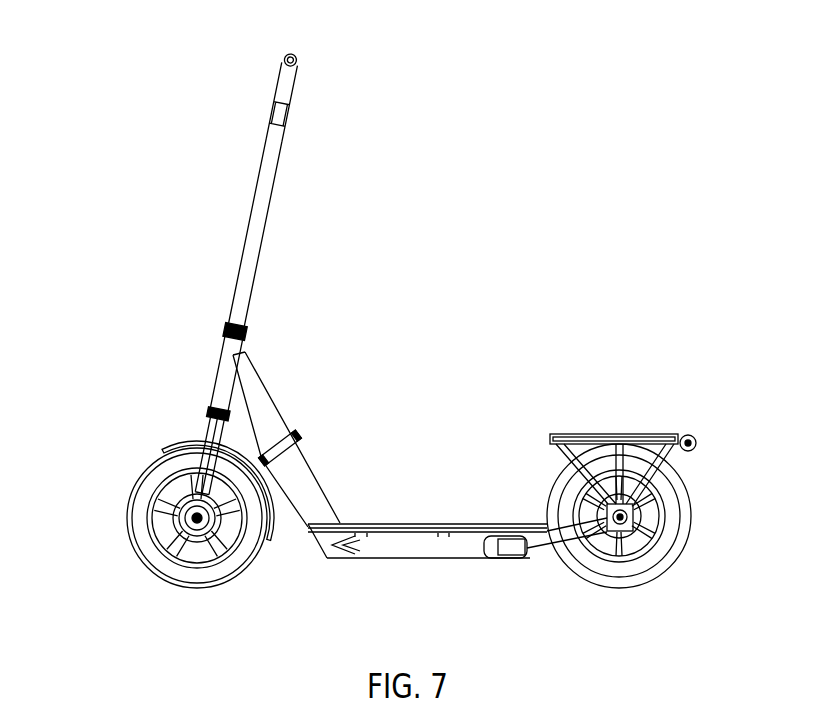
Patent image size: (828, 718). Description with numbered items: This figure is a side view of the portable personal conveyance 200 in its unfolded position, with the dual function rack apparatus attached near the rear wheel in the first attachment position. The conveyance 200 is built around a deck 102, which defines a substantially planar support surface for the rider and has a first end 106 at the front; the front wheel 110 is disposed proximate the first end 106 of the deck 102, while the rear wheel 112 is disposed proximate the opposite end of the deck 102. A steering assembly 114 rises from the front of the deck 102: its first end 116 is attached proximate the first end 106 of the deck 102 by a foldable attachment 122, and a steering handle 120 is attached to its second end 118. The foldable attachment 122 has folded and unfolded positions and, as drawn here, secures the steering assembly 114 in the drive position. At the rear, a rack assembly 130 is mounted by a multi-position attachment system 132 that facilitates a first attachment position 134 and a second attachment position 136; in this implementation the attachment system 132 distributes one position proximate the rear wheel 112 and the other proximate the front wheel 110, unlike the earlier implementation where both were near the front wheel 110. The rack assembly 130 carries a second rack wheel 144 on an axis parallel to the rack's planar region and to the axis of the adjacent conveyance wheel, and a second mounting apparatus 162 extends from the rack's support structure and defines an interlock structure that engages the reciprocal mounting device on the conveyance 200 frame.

The conveyance 200 is at (136, 85).
The deck 102 is at (365, 523).
The first end 106 is at (308, 528).
The front wheel 110 is at (125, 518).
The rear wheel 112 is at (657, 572).
The steering assembly 114 is at (258, 255).
The first end 116 is at (233, 343).
The second end 118 is at (278, 137).
The steering handle 120 is at (283, 68).
The foldable attachment 122 is at (300, 437).
The rack assembly 130 is at (575, 437).
The multi-position attachment system 132 is at (179, 536).
The first attachment position 134 is at (633, 512).
The second attachment position 136 is at (192, 514).
The second rack wheel 144 is at (691, 436).
The second mounting apparatus 162 is at (557, 464).